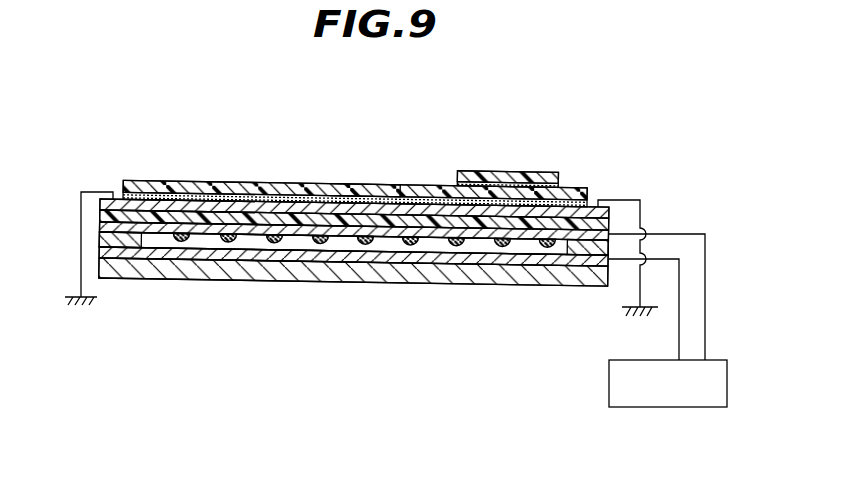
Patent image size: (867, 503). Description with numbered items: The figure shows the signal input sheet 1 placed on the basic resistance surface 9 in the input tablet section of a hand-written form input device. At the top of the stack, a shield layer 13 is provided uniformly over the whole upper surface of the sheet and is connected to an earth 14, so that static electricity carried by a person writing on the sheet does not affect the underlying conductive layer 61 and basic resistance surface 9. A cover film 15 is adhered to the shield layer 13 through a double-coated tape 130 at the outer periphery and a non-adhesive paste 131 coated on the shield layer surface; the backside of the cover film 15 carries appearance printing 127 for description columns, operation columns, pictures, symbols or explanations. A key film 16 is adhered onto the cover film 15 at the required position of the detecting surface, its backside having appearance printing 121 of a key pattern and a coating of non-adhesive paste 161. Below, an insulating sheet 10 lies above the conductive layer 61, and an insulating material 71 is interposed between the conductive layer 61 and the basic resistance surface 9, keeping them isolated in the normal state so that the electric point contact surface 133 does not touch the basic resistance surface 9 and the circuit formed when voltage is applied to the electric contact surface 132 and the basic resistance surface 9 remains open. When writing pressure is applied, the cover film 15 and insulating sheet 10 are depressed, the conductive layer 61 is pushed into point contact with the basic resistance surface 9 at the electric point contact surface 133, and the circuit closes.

The signal input sheet 1 is at (199, 172).
The basic resistance surface 9 is at (345, 255).
The insulating sheet 10 is at (158, 212).
The shield layer 13 is at (245, 210).
The earth 14 is at (108, 192).
The cover film 15 is at (258, 190).
The key film 16 is at (500, 146).
The conductive layer 61 is at (165, 233).
The insulating material 71 is at (192, 237).
The appearance printing of key pattern 121 is at (487, 167).
The appearance printing 127 is at (360, 190).
The double-coated tape 130 is at (364, 163).
The non-adhesive paste 131 is at (315, 193).
The electric contact surface 132 is at (522, 242).
The electric point contact surface 133 is at (296, 248).
The non-adhesive paste 161 is at (515, 177).